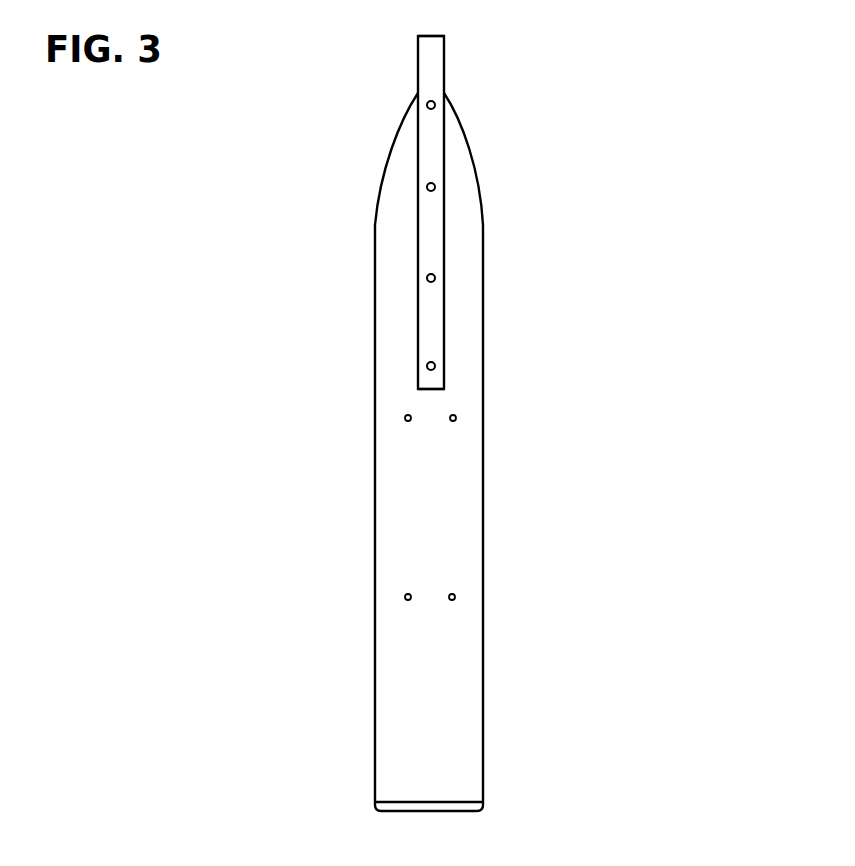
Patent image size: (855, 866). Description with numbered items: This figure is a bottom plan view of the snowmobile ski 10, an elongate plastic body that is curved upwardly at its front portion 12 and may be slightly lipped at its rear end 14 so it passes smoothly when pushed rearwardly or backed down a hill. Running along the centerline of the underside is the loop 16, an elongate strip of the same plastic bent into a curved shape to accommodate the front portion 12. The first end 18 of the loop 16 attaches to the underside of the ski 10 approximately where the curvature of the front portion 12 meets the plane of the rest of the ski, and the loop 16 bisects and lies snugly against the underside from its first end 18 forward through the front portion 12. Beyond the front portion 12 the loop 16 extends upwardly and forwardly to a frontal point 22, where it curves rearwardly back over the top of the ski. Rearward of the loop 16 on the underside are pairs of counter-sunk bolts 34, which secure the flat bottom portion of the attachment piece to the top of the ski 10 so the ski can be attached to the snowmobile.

The snowmobile ski 10 is at (593, 322).
The front portion 12 is at (462, 123).
The rear end 14 is at (408, 811).
The loop 16 is at (432, 170).
The first end 18 is at (428, 380).
The frontal point 22 is at (426, 34).
The bolts 34 is at (410, 421).